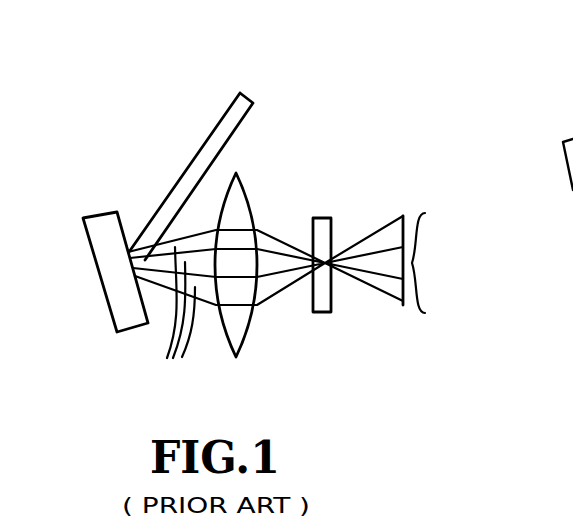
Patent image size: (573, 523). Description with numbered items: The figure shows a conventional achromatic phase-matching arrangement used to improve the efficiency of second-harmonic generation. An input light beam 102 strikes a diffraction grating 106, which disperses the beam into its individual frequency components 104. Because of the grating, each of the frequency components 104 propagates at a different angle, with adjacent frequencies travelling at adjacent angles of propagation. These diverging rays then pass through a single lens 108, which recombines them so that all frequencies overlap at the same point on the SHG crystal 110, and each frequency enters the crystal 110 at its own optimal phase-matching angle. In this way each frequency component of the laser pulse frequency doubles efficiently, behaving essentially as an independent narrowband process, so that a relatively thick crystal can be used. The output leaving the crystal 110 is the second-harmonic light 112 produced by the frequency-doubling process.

The input light beam 102 is at (208, 137).
The frequency components 104 is at (166, 319).
The diffraction grating 106 is at (111, 213).
The single lens 108 is at (249, 196).
The SHG crystal 110 is at (325, 219).
The second-harmonic light 112 is at (384, 296).